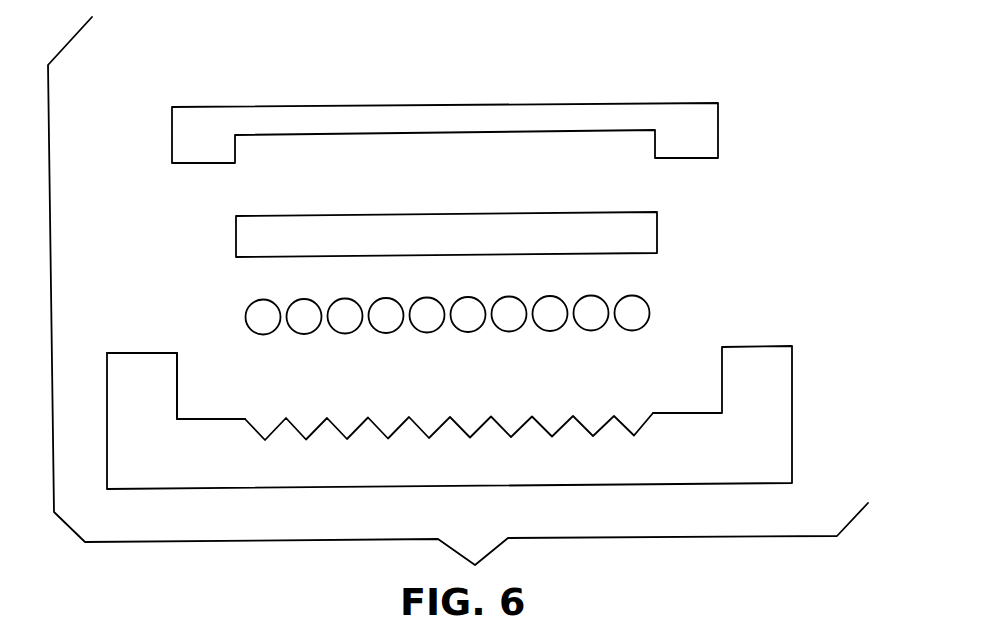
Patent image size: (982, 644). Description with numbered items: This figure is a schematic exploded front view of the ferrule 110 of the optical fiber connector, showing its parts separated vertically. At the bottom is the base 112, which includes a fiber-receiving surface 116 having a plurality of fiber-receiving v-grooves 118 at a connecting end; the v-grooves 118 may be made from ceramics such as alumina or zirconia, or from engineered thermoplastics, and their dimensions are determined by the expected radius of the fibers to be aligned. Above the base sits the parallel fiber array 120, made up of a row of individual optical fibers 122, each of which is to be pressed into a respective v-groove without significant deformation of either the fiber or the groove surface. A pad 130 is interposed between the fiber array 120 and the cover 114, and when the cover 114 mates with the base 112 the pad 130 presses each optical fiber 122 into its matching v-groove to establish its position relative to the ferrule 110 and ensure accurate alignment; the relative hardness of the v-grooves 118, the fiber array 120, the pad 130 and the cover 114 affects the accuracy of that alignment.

The ferrule block 110 is at (323, 76).
The base 112 is at (488, 399).
The cover 114 is at (698, 142).
The fiber-receiving surface 116 is at (207, 419).
The v-grooves 118 is at (612, 414).
The parallel fiber array 120 is at (492, 333).
The optical fiber 122 is at (637, 310).
The pad 130 is at (643, 238).